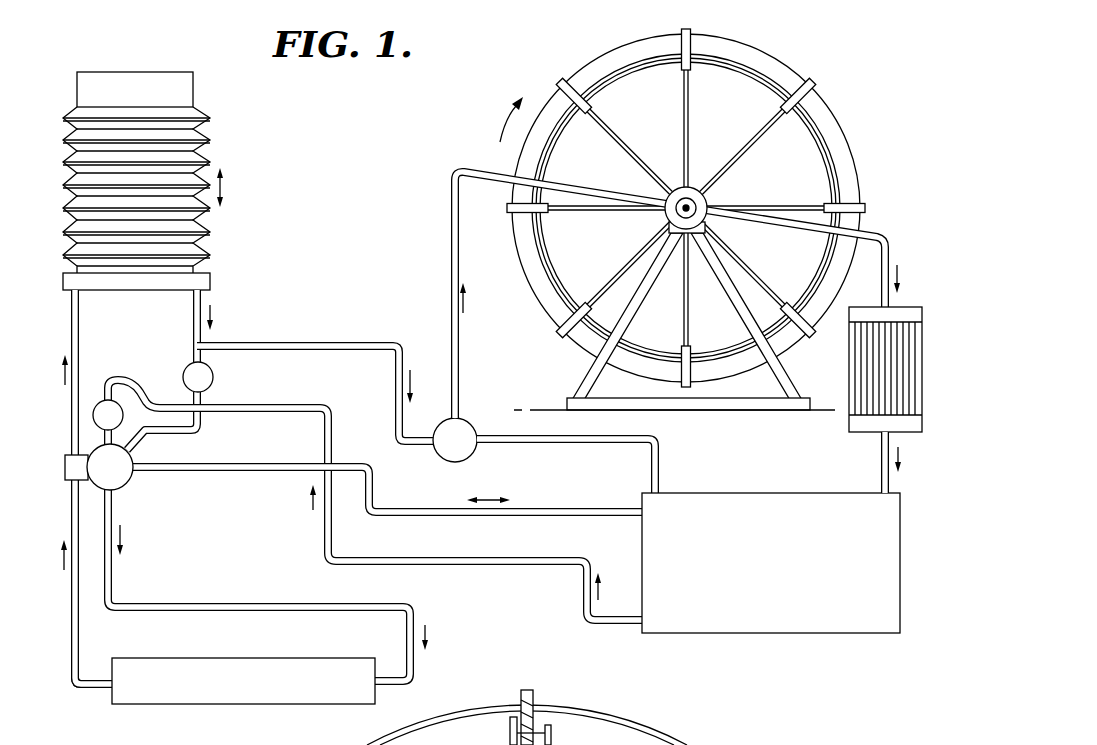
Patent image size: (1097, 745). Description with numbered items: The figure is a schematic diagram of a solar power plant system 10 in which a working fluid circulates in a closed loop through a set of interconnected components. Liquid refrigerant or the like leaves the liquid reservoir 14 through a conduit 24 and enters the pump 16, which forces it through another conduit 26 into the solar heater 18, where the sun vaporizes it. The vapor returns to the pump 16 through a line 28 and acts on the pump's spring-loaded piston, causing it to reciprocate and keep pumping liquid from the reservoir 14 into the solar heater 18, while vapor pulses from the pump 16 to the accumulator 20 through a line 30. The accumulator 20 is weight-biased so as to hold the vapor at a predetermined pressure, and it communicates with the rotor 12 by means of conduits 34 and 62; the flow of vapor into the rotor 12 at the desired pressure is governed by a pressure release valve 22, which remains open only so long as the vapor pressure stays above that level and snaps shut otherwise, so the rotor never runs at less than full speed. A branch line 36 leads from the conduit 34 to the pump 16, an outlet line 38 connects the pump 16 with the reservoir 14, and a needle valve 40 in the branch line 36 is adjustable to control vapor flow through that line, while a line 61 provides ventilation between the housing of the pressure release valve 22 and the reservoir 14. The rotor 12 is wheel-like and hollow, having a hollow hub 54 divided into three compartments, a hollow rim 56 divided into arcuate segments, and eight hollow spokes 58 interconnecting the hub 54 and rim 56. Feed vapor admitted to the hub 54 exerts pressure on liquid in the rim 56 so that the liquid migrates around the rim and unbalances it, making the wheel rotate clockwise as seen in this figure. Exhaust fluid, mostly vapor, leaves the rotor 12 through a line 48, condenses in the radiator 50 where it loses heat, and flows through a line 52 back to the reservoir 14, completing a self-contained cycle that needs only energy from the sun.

The solar powered energy system 10 is at (470, 379).
The rotor 12 is at (650, 216).
The liquid reservoir 14 is at (771, 586).
The pump 16 is at (134, 482).
The solar heater 18 is at (243, 701).
The accumulator 20 is at (176, 181).
The pressure release valve 22 is at (428, 459).
The conduit 24 is at (375, 500).
The conduit 26 is at (268, 585).
The line 28 is at (65, 487).
The line 30 is at (107, 487).
The conduit 34 is at (315, 365).
The branch line 36 is at (202, 423).
The outlet line 38 is at (387, 493).
The needle valve 40 is at (235, 378).
The line 48 is at (903, 247).
The radiator 50 is at (862, 369).
The line 52 is at (853, 462).
The hollow hub 54 is at (704, 182).
The hollow rim 56 is at (686, 198).
The hollow spokes 58 is at (686, 208).
The line 61 is at (566, 466).
The conduit 62 is at (632, 295).